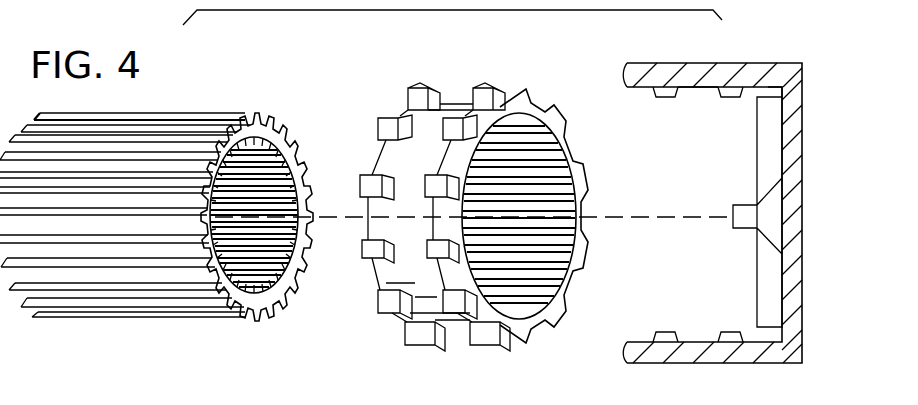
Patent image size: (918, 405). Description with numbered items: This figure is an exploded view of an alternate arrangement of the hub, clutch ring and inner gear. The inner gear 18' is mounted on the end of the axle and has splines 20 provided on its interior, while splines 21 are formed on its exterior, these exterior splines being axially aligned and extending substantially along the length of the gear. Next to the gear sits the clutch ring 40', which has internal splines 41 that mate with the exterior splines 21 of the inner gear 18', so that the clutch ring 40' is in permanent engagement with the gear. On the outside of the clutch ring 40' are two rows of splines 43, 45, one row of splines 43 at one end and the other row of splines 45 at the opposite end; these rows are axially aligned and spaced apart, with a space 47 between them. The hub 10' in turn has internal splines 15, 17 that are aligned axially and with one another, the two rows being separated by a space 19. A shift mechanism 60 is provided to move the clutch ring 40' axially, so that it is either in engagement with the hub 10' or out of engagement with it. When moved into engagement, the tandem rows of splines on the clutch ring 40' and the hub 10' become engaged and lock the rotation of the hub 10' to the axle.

The hub 10' is at (712, 184).
The internal splines 15 is at (667, 98).
The internal splines 17 is at (737, 98).
The inner gear 18' is at (138, 240).
The space 19 is at (700, 88).
The splines 20 is at (285, 150).
The splines 21 is at (212, 117).
The clutch ring 40' is at (501, 204).
The internal splines 41 is at (580, 258).
The splines 43 is at (421, 95).
The splines 45 is at (478, 92).
The space 47 is at (452, 103).
The shift mechanism 60 is at (768, 88).